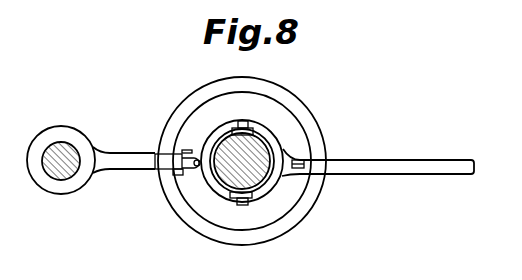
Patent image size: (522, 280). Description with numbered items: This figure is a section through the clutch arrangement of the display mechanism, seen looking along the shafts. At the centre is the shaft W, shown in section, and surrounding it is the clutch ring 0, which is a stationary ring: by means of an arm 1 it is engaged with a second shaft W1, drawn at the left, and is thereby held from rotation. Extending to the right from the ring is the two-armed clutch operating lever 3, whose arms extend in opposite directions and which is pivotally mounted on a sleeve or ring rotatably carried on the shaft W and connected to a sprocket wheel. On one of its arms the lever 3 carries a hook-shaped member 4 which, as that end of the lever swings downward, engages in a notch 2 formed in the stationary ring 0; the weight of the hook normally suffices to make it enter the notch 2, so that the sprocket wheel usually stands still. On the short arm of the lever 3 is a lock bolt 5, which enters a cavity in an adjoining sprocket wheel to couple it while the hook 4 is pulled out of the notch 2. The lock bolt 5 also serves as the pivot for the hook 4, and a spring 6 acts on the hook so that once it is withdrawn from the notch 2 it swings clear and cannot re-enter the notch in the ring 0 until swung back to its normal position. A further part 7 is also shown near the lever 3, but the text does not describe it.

The clutch ring 0 is at (178, 207).
The arm 1 is at (110, 166).
The notch 2 is at (165, 153).
The clutch operating lever 3 is at (392, 168).
The hook-shaped member 4 is at (189, 147).
The lock bolt 5 is at (198, 167).
The spring 6 is at (167, 169).
The screw O7 7 is at (307, 157).
The shaft W is at (257, 168).
The shaft W1 is at (60, 146).